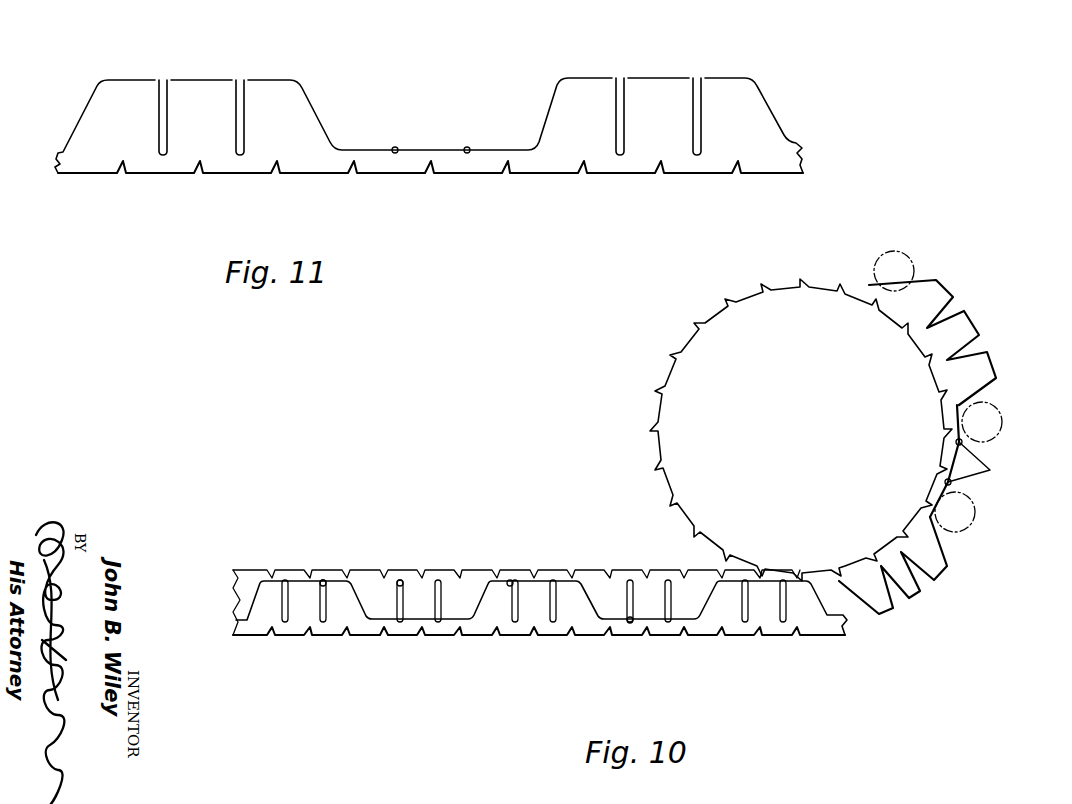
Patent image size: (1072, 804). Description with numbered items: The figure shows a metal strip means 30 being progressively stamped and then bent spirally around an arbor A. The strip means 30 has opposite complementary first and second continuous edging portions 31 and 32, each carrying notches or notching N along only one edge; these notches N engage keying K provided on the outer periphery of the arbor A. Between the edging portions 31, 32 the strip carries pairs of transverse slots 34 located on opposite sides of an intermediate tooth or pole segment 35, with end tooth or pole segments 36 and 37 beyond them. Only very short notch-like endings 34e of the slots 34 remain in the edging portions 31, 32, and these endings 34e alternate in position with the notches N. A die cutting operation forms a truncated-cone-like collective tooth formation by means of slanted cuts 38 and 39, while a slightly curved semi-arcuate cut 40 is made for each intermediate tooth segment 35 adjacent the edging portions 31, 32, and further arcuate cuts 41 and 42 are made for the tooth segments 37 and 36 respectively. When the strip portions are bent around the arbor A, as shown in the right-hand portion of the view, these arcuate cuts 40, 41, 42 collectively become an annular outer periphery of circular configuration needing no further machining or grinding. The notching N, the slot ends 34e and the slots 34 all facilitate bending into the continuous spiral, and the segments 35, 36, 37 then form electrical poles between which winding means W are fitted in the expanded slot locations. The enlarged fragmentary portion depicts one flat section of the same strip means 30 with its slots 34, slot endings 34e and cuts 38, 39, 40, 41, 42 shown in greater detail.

In FIG. 10, the metal strip means 30 is at (233, 600).
In FIG. 11, the first continuous edging portion 31 is at (58, 170).
In FIG. 10, the first continuous edging portion 31 is at (233, 635).
In FIG. 10, the second continuous edging portion 32 is at (233, 580).
In FIG. 11, the transverse slots 34 is at (165, 105).
In FIG. 10, the transverse slots 34 is at (287, 622).
In FIG. 11, the notch-like endings 34e is at (467, 150).
In FIG. 10, the notch-like endings 34e is at (323, 583).
In FIG. 11, the intermediate tooth or pole segment 35 is at (222, 90).
In FIG. 10, the intermediate tooth or pole segment 35 is at (528, 590).
In FIG. 11, the end tooth or pole segment 36 is at (100, 97).
In FIG. 10, the end tooth or pole segment 36 is at (250, 615).
In FIG. 11, the end tooth or pole segment 37 is at (300, 110).
In FIG. 10, the end tooth or pole segment 37 is at (355, 595).
In FIG. 11, the slanted cut 38 is at (85, 115).
In FIG. 10, the slanted cut 38 is at (250, 590).
In FIG. 11, the slanted cut 39 is at (328, 125).
In FIG. 10, the slanted cut 39 is at (365, 615).
In FIG. 11, the semi-arcuate cut 40 is at (182, 78).
In FIG. 10, the semi-arcuate cut 40 is at (553, 583).
In FIG. 11, the arcuate cut 41 is at (290, 78).
In FIG. 10, the arcuate cut 41 is at (335, 581).
In FIG. 11, the arcuate cut 42 is at (122, 80).
In FIG. 10, the arcuate cut 42 is at (275, 581).
In FIG. 11, the notches N is at (278, 173).
In FIG. 10, the notches N is at (307, 575).
In FIG. 10, the arbor A is at (686, 337).
In FIG. 10, the keying K is at (660, 393).
In FIG. 10, the winding means W is at (895, 251).